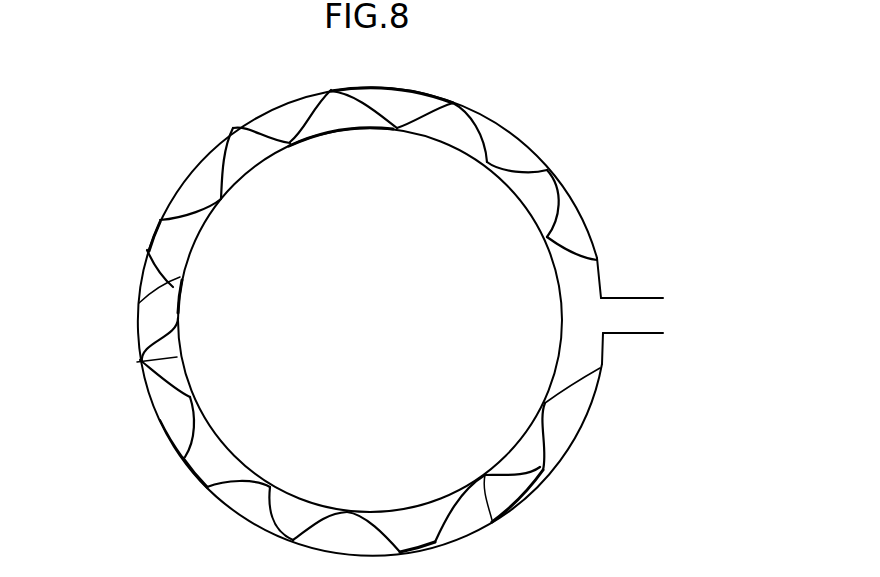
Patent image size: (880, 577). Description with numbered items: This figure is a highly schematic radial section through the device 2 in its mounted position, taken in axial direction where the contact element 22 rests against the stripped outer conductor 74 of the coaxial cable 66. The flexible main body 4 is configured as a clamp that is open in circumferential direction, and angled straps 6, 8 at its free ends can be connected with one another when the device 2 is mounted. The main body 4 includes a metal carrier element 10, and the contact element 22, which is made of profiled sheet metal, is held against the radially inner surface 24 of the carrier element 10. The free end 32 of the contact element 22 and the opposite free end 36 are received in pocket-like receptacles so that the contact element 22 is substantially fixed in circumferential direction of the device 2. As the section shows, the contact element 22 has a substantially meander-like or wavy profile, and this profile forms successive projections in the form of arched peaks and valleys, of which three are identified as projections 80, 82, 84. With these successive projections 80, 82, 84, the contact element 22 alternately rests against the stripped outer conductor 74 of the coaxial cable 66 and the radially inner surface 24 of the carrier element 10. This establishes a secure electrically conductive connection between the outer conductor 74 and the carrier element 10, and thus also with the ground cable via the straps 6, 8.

The device 2 is at (430, 78).
The main body 4 is at (287, 100).
The strap 6 is at (643, 297).
The strap 8 is at (640, 334).
The carrier element 10 is at (523, 142).
The contact element 22 is at (138, 303).
The radially inner surface 24 is at (166, 428).
The free end 32 is at (598, 257).
The free end 36 is at (593, 376).
The coaxial cable 66 is at (398, 345).
The outer conductor 74 is at (142, 362).
The projection 80 is at (545, 405).
The projection 82 is at (542, 471).
The projection 84 is at (492, 520).